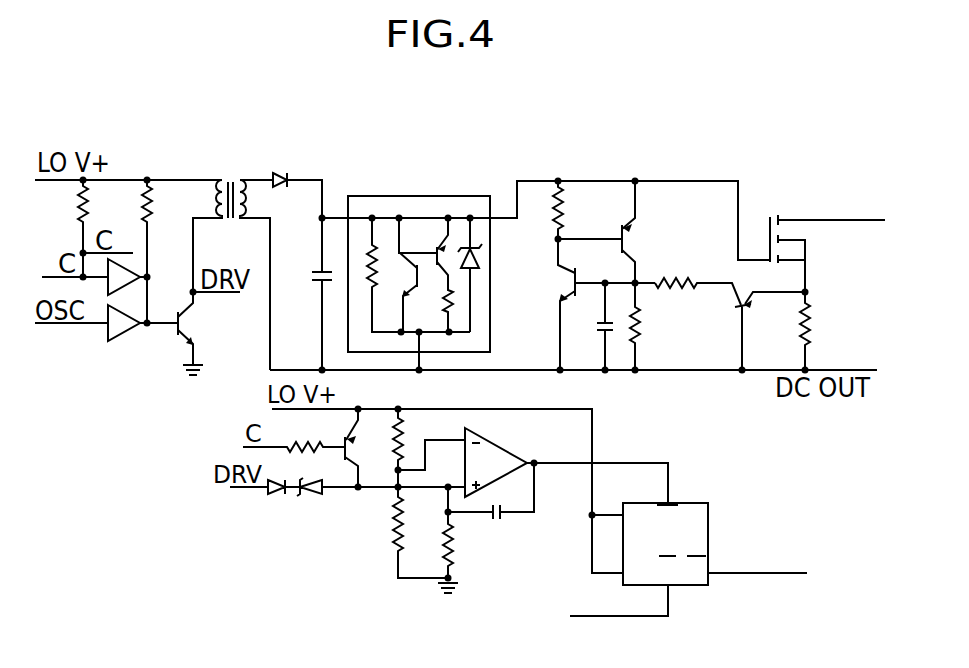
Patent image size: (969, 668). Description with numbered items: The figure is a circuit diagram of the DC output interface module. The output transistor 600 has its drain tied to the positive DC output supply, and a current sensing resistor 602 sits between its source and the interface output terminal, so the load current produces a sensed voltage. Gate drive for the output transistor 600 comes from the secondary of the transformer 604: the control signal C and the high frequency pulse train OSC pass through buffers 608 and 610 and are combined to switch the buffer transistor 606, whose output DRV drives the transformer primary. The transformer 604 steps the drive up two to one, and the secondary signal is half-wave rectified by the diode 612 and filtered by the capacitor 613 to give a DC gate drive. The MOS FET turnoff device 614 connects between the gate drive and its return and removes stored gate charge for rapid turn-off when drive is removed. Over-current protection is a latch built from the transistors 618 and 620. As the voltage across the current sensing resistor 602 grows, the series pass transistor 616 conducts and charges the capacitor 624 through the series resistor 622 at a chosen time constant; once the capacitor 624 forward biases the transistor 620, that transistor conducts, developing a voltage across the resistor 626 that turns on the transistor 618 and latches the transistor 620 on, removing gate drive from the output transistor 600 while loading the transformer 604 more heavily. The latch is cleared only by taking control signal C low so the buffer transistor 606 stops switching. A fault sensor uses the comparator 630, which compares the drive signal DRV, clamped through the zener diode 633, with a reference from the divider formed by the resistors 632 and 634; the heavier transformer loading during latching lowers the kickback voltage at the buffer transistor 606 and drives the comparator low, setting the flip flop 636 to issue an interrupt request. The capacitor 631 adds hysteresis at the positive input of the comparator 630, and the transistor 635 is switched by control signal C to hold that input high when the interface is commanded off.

The output transistor 600 is at (770, 228).
The current sensing resistor 602 is at (807, 325).
The transformer 604 is at (227, 178).
The buffer transistor 606 is at (186, 311).
The buffer 608 is at (115, 251).
The buffer 610 is at (131, 341).
The diode 612 is at (285, 172).
The capacitor 613 is at (322, 282).
The MOS FET turnoff device 614 is at (386, 196).
The series pass transistor 616 is at (770, 331).
The transistor 618 is at (628, 233).
The transistor 620 is at (567, 283).
The series resistor 622 is at (680, 290).
The capacitor 624 is at (600, 326).
The resistor 626 is at (587, 210).
The comparator 630 is at (498, 455).
The capacitor 631 is at (500, 519).
The resistor 632 is at (402, 447).
The zener diode 633 is at (306, 495).
The resistor 634 is at (393, 524).
The transistor 635 is at (347, 441).
The flip flop 636 is at (732, 530).